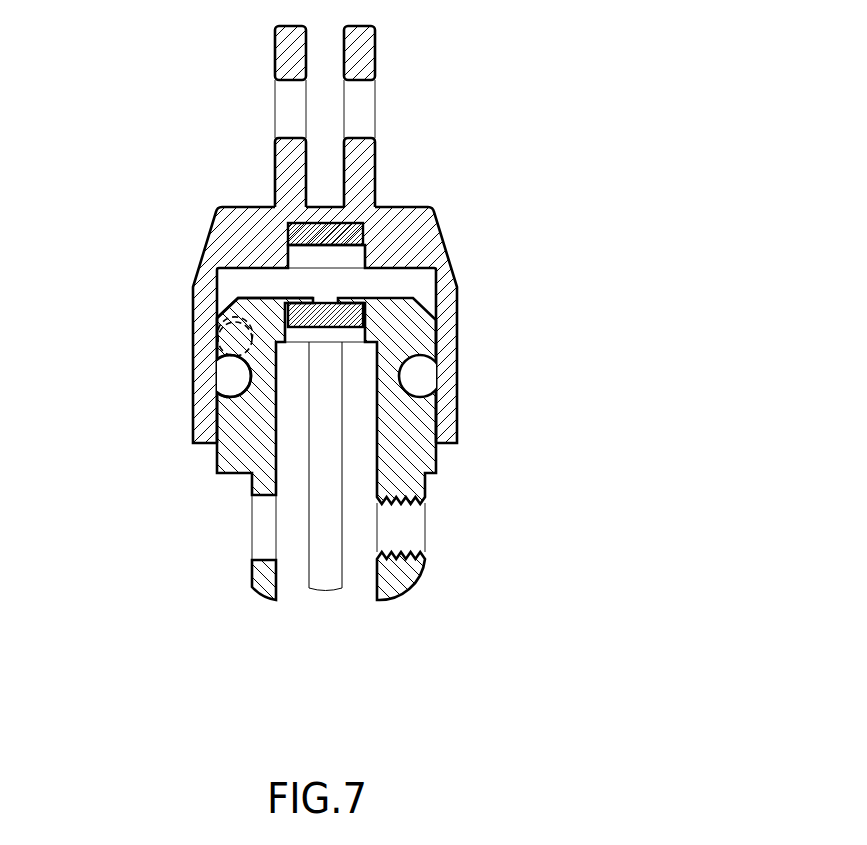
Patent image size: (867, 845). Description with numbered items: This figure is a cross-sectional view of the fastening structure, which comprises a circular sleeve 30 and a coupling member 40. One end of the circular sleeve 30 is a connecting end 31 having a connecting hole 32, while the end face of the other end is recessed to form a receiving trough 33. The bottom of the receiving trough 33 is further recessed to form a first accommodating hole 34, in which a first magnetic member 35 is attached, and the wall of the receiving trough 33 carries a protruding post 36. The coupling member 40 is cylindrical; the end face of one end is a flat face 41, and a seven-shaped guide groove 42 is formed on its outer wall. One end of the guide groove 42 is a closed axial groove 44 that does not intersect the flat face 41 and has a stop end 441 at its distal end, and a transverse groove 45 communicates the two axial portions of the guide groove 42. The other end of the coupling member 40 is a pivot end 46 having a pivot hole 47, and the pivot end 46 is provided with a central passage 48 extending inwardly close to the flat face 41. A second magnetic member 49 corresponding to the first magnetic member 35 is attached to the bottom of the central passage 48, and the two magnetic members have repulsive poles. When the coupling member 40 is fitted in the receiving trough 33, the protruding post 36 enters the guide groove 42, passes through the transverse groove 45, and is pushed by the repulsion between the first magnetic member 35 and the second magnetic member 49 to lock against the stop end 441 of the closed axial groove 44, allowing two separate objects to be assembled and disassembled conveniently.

The circular sleeve 30 is at (445, 233).
The connecting end 31 is at (367, 55).
The connecting hole 32 is at (363, 107).
The receiving trough 33 is at (407, 283).
The first accommodating hole 34 is at (376, 206).
The first magnetic member 35 is at (303, 228).
The protruding post 36 is at (222, 360).
The coupling member 40 is at (217, 463).
The flat face 41 is at (267, 298).
The guide groove 42 is at (370, 405).
The transverse groove 45 is at (420, 373).
The closed axial groove 44 is at (214, 348).
The stop end 441 is at (210, 312).
The pivot end 46 is at (418, 575).
The pivot hole 47 is at (260, 527).
The central passage 48 is at (328, 405).
The second magnetic member 49 is at (358, 313).